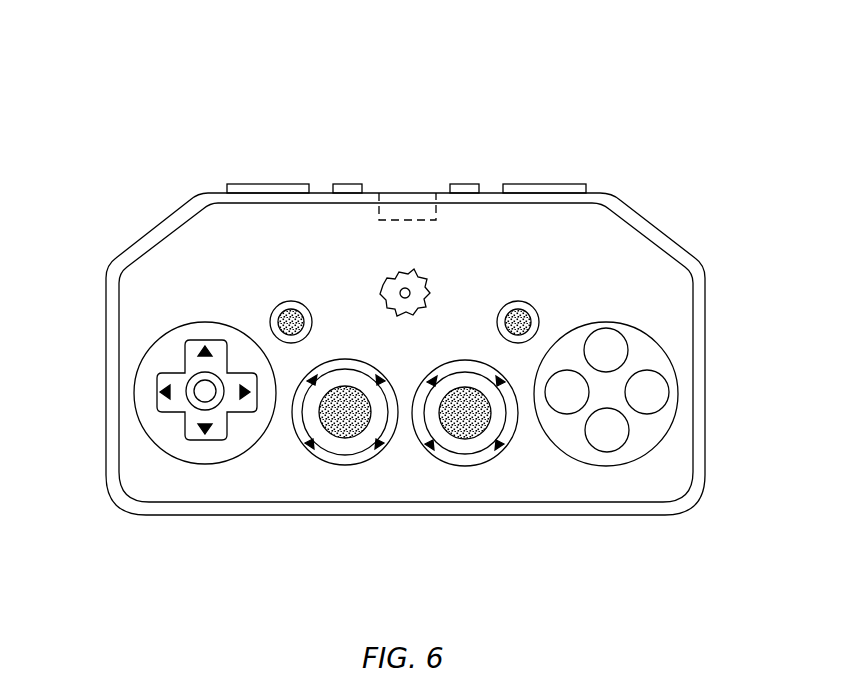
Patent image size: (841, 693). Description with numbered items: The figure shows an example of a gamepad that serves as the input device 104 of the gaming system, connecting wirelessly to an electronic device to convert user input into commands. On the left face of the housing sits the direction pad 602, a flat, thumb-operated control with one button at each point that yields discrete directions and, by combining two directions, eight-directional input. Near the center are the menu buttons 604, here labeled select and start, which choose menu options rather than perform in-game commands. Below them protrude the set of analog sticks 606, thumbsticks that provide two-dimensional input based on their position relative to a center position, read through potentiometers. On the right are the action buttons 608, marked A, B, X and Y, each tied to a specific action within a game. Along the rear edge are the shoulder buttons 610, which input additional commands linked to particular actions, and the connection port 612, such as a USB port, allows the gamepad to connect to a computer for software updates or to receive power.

The input device 104 is at (105, 148).
The direction pad 602 is at (157, 372).
The menu buttons 604 is at (505, 308).
The analog sticks 606 is at (453, 435).
The action buttons 608 is at (620, 437).
The shoulder buttons 610 is at (520, 184).
The connection port 612 is at (417, 193).